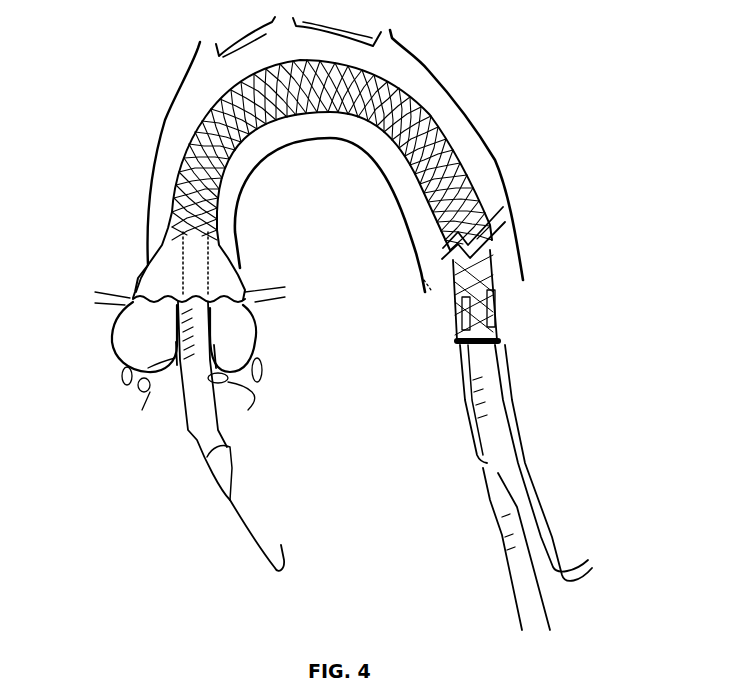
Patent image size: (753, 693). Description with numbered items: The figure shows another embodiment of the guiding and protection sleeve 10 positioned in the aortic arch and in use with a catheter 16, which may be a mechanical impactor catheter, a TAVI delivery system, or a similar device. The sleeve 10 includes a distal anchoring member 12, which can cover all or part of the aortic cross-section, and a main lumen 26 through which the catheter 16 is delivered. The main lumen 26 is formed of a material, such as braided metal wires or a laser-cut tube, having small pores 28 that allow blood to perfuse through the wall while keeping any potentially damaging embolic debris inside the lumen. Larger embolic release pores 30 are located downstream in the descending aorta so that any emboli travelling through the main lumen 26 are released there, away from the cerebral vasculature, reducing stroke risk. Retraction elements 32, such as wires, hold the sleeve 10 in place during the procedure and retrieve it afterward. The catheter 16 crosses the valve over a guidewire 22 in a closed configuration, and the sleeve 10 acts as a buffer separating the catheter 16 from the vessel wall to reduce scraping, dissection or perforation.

The guiding and protection sleeve 10 is at (180, 148).
The distal anchoring member 12 is at (122, 292).
The catheter 16 is at (181, 438).
The guidewire 22 is at (237, 532).
The main lumen 26 is at (470, 148).
The pores 28 is at (422, 118).
The embolic release pores 30 is at (514, 312).
The retraction elements 32 is at (563, 530).